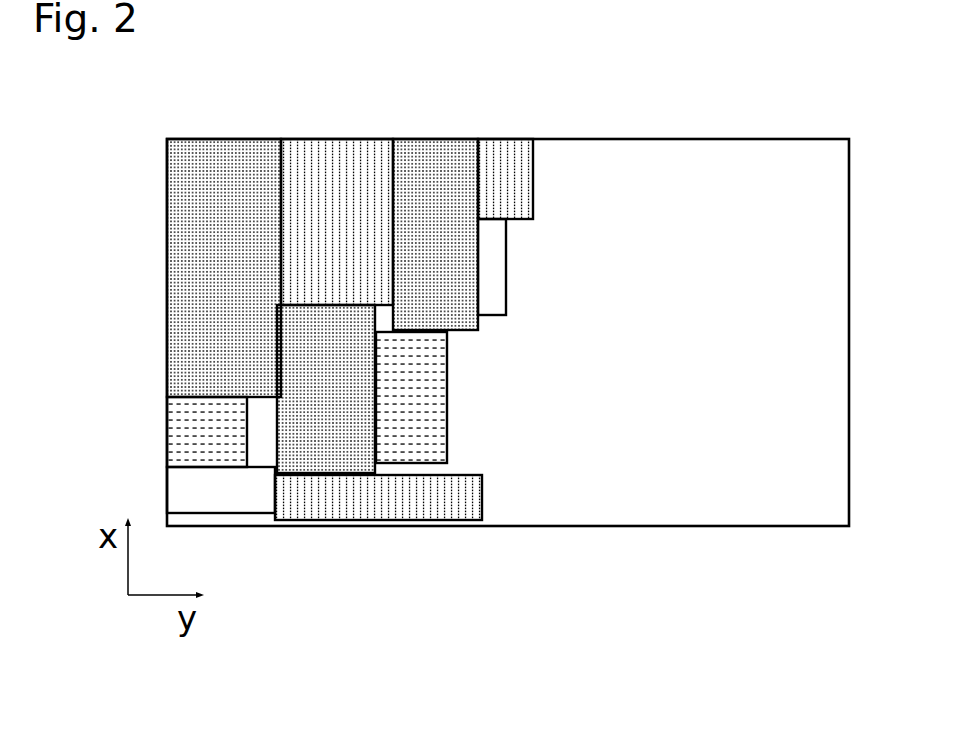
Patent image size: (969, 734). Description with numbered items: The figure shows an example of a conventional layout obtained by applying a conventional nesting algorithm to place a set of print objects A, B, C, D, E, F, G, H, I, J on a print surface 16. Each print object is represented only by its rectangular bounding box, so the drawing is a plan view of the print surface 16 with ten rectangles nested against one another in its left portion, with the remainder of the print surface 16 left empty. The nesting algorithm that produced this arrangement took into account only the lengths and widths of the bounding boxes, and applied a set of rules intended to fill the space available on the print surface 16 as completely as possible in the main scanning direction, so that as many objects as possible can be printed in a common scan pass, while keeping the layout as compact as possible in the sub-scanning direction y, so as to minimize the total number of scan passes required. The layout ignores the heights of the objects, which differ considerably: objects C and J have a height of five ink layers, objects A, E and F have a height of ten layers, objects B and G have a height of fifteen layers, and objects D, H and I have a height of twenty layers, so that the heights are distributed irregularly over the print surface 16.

The print surface 16 is at (683, 178).
The print object A is at (193, 238).
The print object B is at (195, 430).
The print object C is at (197, 492).
The print object D is at (327, 180).
The print object E is at (325, 430).
The print object F is at (438, 180).
The print object G is at (423, 382).
The print object H is at (425, 490).
The print object I is at (502, 180).
The print object J is at (495, 272).